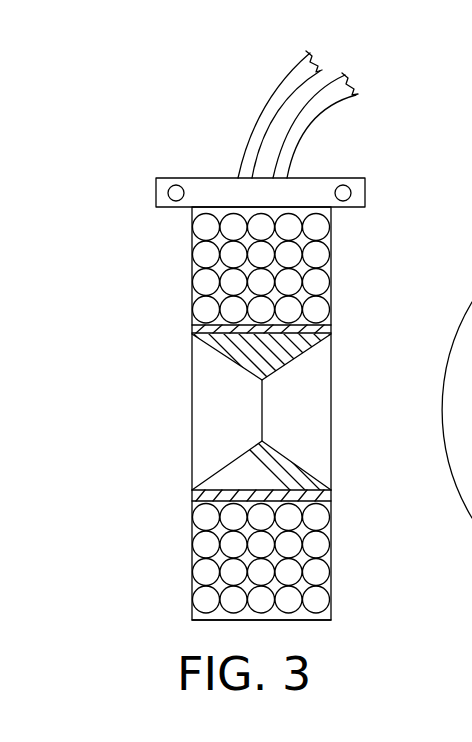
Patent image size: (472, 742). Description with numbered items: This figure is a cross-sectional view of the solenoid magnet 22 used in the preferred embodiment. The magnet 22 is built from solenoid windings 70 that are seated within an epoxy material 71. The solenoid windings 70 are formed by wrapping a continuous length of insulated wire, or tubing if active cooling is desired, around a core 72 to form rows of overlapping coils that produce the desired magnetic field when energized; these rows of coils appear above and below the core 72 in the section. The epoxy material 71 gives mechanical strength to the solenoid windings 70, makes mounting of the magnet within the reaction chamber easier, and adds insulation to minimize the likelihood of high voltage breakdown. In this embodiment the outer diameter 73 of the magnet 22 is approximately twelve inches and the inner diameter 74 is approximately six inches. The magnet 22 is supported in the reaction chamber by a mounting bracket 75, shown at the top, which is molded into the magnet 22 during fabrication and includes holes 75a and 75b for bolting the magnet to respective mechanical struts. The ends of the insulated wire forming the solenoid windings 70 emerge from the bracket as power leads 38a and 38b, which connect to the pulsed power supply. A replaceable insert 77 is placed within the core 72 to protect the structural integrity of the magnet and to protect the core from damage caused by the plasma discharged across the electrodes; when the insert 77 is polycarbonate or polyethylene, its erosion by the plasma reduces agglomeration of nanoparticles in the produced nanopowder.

The magnet 22 is at (93, 181).
The power lead 38a is at (257, 121).
The power lead 38b is at (304, 127).
The solenoid windings 70 is at (320, 545).
The epoxy material 71 is at (303, 615).
The core 72 is at (331, 333).
The outer diameter 73 is at (177, 620).
The inner diameter 74 is at (181, 334).
The mounting bracket 75 is at (230, 192).
The hole 75a is at (168, 191).
The hole 75b is at (350, 192).
The replaceable insert 77 is at (283, 417).